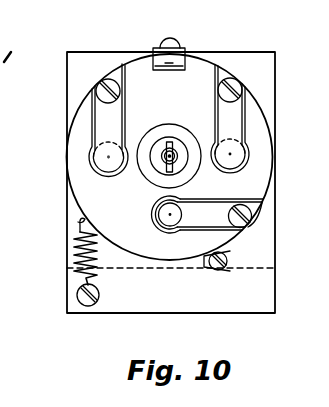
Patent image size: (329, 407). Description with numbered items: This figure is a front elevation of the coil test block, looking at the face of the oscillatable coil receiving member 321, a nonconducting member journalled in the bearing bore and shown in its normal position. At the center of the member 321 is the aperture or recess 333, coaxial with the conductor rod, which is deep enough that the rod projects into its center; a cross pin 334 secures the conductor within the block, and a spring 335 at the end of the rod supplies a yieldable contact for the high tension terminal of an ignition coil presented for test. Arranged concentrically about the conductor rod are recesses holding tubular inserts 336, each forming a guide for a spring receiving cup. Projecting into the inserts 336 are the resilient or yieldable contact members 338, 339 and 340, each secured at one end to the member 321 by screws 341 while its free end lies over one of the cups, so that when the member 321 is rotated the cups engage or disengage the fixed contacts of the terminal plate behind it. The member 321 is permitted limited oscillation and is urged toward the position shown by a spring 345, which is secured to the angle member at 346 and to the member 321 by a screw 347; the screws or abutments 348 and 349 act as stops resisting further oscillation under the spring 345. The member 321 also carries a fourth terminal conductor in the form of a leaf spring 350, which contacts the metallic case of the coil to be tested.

The oscillatable coil receiving member 321 is at (76, 187).
The aperture or recess 333 is at (148, 132).
The cross pin 334 is at (173, 163).
The spring 335 is at (188, 136).
The tubular inserts 336 is at (109, 177).
The resilient contact member 338 is at (94, 127).
The resilient contact member 339 is at (240, 120).
The resilient contact member 340 is at (184, 255).
The screws 341 is at (110, 82).
The spring 345 is at (76, 267).
The spring attachment point 346 is at (89, 306).
The screw 347 is at (78, 221).
The screw or abutment 348 is at (204, 272).
The screw or abutment 349 is at (232, 259).
The leaf spring 350 is at (176, 58).